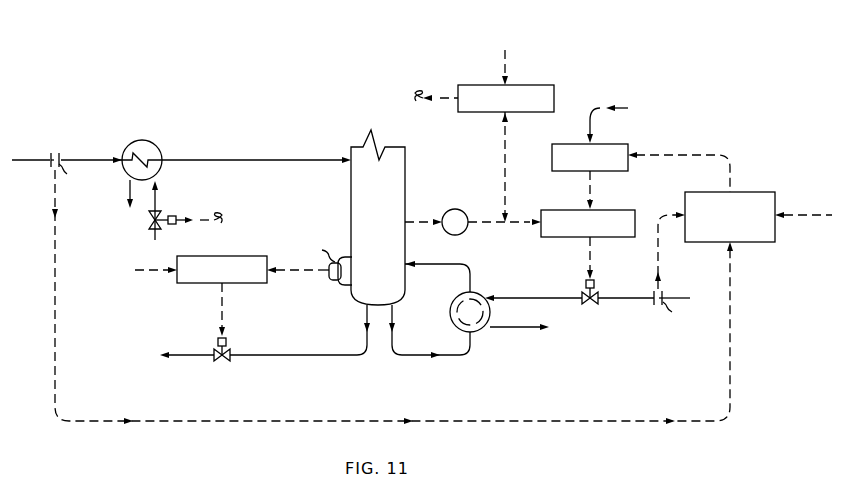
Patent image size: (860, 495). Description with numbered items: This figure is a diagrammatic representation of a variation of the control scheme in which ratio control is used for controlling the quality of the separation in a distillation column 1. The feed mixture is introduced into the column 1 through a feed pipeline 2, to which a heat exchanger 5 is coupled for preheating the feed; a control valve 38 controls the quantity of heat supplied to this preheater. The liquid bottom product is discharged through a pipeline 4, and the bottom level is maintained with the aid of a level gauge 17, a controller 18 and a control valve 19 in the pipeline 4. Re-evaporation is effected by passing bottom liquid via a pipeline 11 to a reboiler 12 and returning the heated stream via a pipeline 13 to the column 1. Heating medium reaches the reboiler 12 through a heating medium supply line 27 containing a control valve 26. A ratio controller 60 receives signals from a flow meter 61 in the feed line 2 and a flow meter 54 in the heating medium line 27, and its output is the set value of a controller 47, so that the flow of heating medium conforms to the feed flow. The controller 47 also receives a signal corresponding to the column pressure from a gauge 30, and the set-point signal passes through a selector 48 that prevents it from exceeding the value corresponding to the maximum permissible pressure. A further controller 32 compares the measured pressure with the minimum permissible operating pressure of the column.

The distillation column 1 is at (382, 195).
The feed pipeline 2 is at (250, 160).
The bottom product pipeline 4 is at (293, 355).
The heat exchanger 5 is at (130, 151).
The reboiler supply pipeline 11 is at (404, 355).
The reboiler 12 is at (458, 301).
The reboiler return pipeline 13 is at (420, 264).
The level gauge 17 is at (333, 280).
The controller 18 is at (236, 256).
The control valve 19 is at (224, 360).
The control valve 26 is at (592, 303).
The heating medium supply line 27 is at (516, 298).
The pressure gauge 30 is at (444, 215).
The controller 32 is at (521, 85).
The control valve 38 is at (149, 225).
The controller 47 is at (602, 210).
The selector 48 is at (604, 125).
The flow meter 54 is at (653, 294).
The ratio controller 60 is at (740, 192).
The flow meter 61 is at (52, 153).